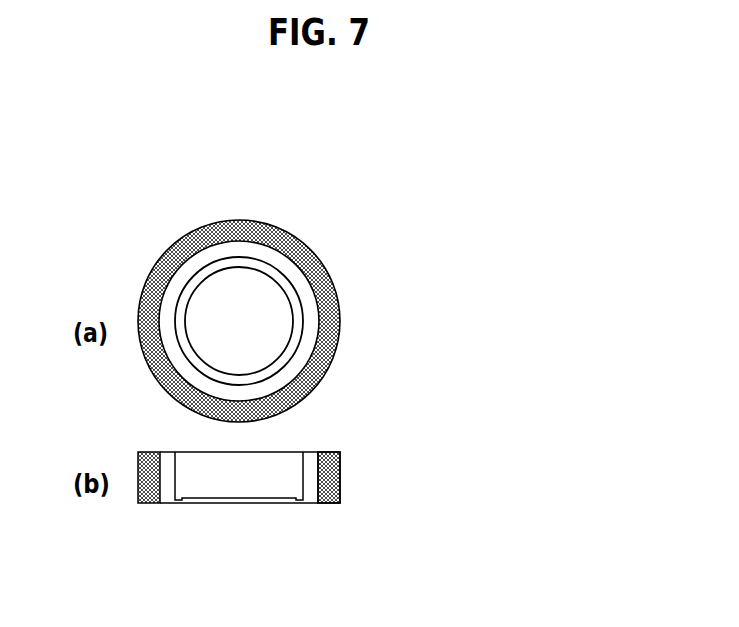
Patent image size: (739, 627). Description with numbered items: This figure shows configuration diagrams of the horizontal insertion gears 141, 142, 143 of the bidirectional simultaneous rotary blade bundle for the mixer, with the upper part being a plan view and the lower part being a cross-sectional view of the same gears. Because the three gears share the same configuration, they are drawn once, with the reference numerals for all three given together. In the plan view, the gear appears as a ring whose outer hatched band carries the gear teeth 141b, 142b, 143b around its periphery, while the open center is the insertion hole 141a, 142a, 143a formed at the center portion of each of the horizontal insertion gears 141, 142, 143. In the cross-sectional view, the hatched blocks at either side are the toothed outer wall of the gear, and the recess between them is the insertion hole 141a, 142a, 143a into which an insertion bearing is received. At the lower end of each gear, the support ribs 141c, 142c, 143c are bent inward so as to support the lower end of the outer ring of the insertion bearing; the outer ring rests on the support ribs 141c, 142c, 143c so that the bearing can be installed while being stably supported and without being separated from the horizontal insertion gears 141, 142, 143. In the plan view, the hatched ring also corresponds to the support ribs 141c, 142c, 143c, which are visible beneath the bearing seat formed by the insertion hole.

The horizontal insertion gear 141 is at (321, 370).
The horizontal insertion gear 142 is at (321, 370).
The horizontal insertion gear 143 is at (321, 370).
The insertion hole 141a is at (228, 522).
The insertion hole 142a is at (228, 522).
The insertion hole 143a is at (248, 473).
The gear teeth 141b is at (456, 454).
The gear teeth 142b is at (456, 454).
The gear teeth 143b is at (387, 437).
The support rib 141c is at (355, 376).
The support rib 142c is at (355, 376).
The support rib 143c is at (347, 238).